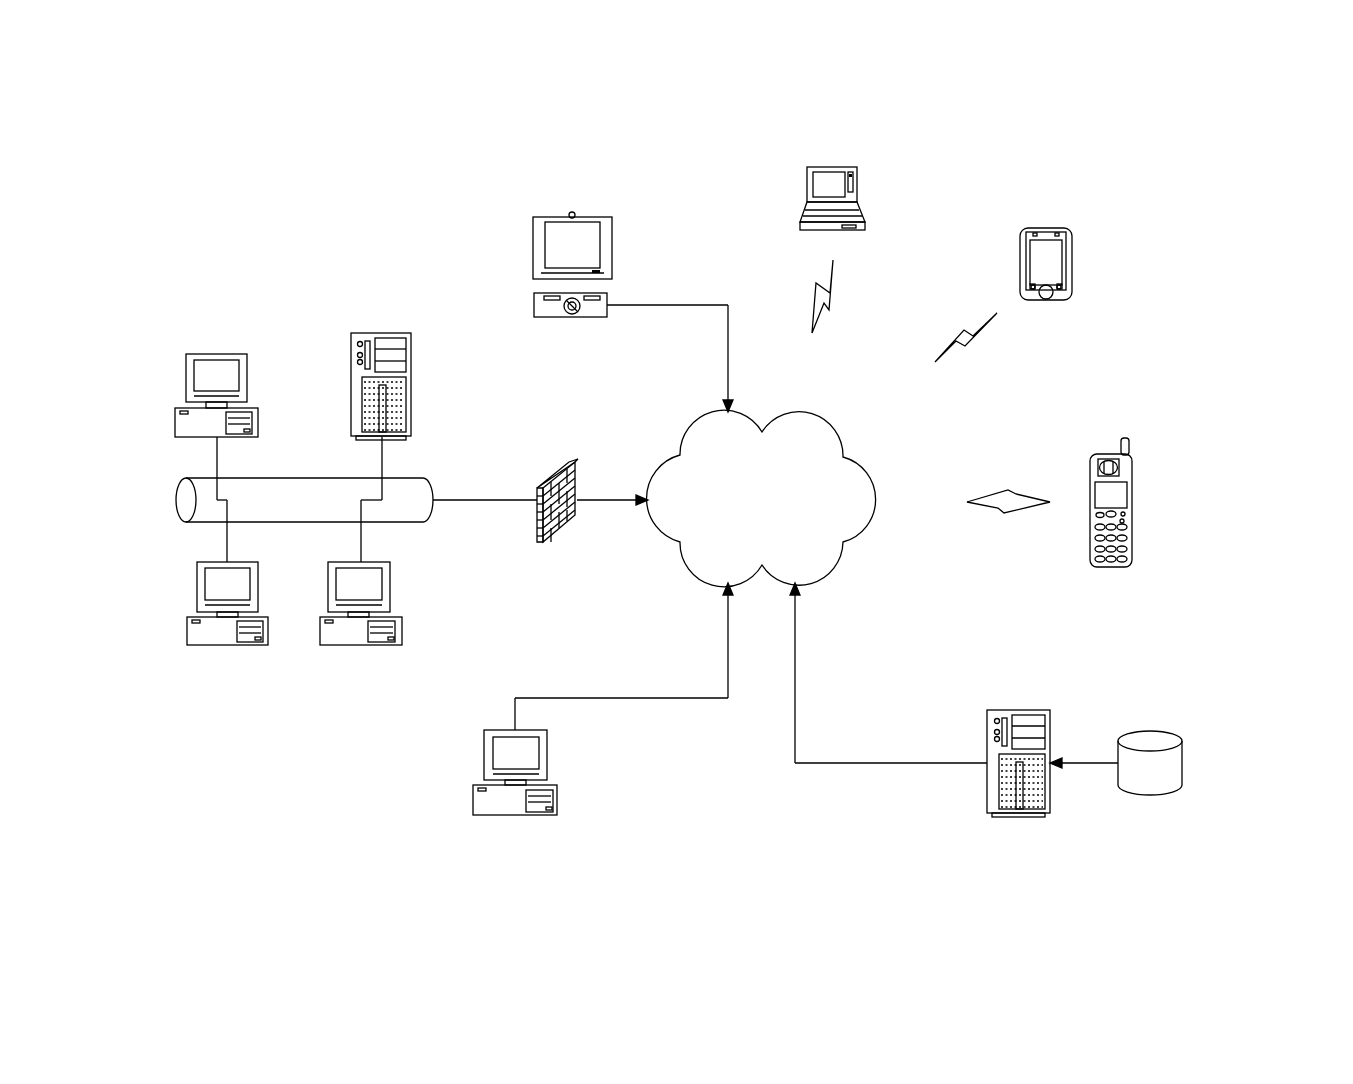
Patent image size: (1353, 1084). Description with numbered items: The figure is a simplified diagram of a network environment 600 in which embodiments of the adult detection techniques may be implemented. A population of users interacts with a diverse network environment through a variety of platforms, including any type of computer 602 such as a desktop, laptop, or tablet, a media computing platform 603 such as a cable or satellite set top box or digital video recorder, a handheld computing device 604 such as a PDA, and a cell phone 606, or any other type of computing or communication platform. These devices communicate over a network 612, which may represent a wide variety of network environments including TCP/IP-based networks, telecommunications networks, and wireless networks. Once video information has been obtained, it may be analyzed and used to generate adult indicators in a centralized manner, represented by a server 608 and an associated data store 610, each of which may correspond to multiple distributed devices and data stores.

The networked system 600 is at (1205, 108).
The computer 602 is at (186, 385).
The media computing platform 603 is at (534, 300).
The handheld computing device 604 is at (1025, 232).
The cell phone 606 is at (1093, 462).
The server 608 is at (998, 712).
The data store 610 is at (1151, 730).
The network 612 is at (695, 430).